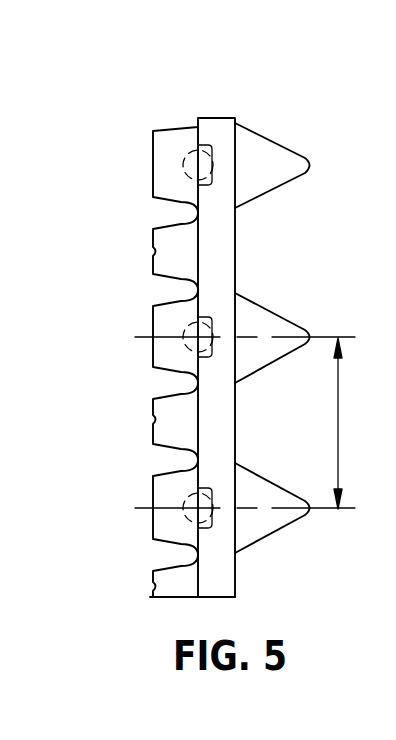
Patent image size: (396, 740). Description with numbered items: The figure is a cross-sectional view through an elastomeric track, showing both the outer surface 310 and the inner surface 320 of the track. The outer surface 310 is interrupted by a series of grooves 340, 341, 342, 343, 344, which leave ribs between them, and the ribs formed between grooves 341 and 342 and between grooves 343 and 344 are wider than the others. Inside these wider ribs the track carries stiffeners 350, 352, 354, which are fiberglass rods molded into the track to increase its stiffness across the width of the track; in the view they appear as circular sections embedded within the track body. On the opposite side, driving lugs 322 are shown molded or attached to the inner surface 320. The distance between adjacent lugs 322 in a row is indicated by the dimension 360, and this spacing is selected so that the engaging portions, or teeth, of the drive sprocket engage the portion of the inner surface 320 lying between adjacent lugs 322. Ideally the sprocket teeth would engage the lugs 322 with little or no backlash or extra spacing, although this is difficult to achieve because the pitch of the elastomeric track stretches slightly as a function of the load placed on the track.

The outer surface 310 is at (167, 140).
The inner surface 320 is at (237, 268).
The driving lugs 322 is at (277, 180).
The groove 340 is at (172, 215).
The groove 341 is at (172, 290).
The groove 342 is at (172, 386).
The groove 343 is at (172, 461).
The groove 344 is at (172, 556).
The stiffener 350 is at (205, 527).
The stiffener 352 is at (207, 350).
The stiffener 354 is at (207, 165).
The distance between the lugs 360 is at (340, 424).